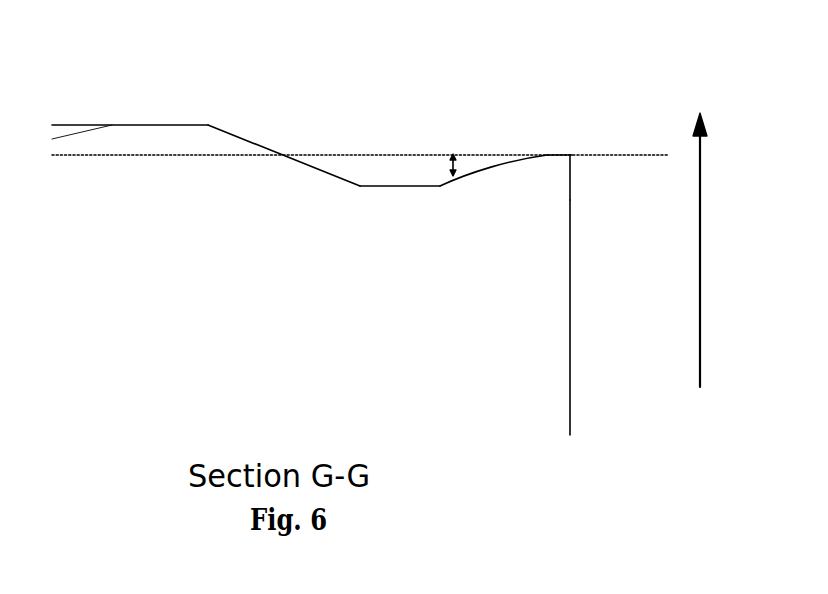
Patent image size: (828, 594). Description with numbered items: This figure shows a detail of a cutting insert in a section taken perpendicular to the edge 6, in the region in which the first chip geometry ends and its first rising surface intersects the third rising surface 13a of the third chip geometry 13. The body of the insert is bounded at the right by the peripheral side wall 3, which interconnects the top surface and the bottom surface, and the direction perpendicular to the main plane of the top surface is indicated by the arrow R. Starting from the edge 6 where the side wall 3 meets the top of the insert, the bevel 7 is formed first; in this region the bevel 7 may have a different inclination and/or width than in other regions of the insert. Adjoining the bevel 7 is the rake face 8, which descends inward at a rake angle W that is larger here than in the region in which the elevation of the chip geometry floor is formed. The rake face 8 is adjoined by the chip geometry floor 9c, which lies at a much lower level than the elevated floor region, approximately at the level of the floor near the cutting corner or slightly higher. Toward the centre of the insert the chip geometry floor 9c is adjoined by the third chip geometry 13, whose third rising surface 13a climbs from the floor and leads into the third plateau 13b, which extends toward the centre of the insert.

The side wall 3 is at (570, 349).
The edge 6 is at (572, 155).
The bevel 7 is at (547, 155).
The rake face 8 is at (438, 184).
The chip geometry floor 9c is at (393, 186).
The third chip geometry 13 is at (120, 22).
The third rising surface 13a is at (258, 143).
The third plateau 13b is at (190, 125).
The rake angle W is at (454, 160).
The direction perpendicular to the main plane R is at (711, 250).